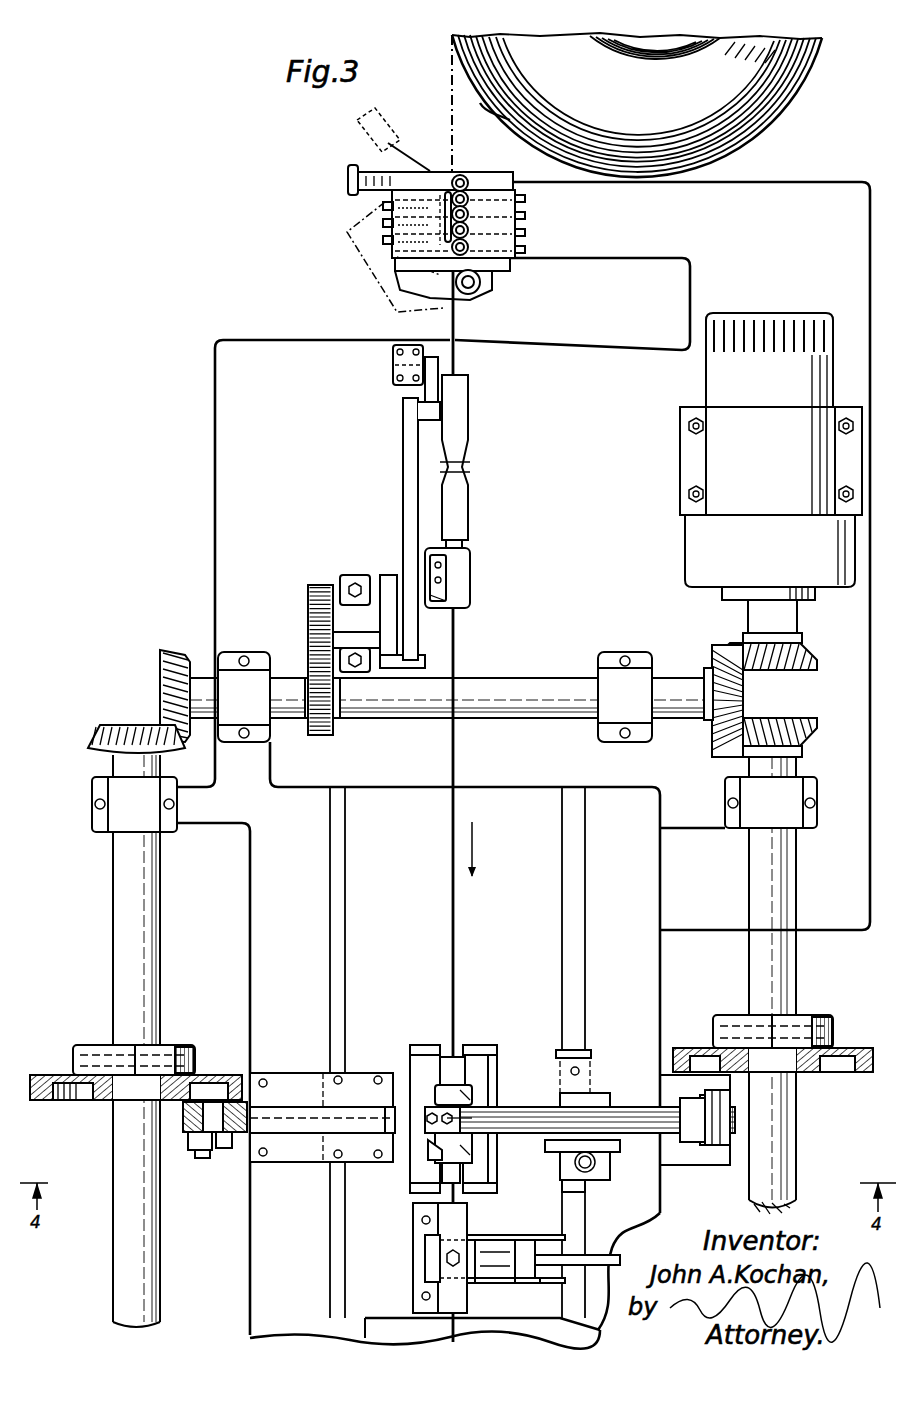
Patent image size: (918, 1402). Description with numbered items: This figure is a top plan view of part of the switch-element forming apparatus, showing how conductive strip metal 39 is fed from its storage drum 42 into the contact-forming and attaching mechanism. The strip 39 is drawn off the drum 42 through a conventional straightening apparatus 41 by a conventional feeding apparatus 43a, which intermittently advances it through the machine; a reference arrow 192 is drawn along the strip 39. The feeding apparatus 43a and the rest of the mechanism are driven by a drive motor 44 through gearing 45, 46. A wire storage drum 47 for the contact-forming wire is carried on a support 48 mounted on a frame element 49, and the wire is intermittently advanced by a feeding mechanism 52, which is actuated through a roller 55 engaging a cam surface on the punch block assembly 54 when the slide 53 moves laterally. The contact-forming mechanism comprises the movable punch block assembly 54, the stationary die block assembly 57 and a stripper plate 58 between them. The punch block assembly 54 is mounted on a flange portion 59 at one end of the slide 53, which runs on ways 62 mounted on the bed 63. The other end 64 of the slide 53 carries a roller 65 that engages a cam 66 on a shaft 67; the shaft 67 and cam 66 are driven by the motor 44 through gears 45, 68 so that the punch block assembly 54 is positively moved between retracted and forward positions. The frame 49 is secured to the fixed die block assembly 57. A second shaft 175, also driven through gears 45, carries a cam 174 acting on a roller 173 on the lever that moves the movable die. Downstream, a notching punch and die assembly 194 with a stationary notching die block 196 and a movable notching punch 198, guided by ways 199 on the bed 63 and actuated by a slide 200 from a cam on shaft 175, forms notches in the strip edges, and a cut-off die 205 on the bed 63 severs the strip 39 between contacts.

The conductive strip metal 39 is at (455, 754).
The straightening apparatus 41 is at (355, 212).
The storage drum 42 is at (750, 85).
The feeding apparatus 43a is at (478, 468).
The drive motor 44 is at (770, 312).
The gearing 45 is at (770, 692).
The gearing 46 is at (297, 642).
The wire storage drum 47 is at (516, 1105).
The support 48 is at (596, 1092).
The frame element 49 is at (633, 1062).
The feeding mechanism 52 is at (420, 1113).
The slide 53 is at (300, 1135).
The punch block assembly 54 is at (430, 1072).
The roller 55 is at (428, 1150).
The stationary die block assembly 57 is at (476, 1062).
The stripper plate 58 is at (452, 1058).
The flange portion 59 is at (358, 1118).
The ways 62 is at (286, 1080).
The bed 63 is at (262, 965).
The other end of slide 64 is at (233, 1135).
The roller 65 is at (212, 1090).
The cam 66 is at (88, 1102).
The shaft 67 is at (120, 984).
The gear 68 is at (132, 712).
The roller 173 is at (700, 1060).
The cam 174 is at (846, 1048).
The shaft 175 is at (796, 1145).
The wire feed direction 192 is at (476, 850).
The notching punch and die assembly 194 is at (411, 1288).
The stationary notching die block 196 is at (418, 1268).
The movable notching punch 198 is at (468, 1222).
The ways 199 is at (542, 1284).
The slide 200 is at (602, 1256).
The cut-off die 205 is at (540, 1322).